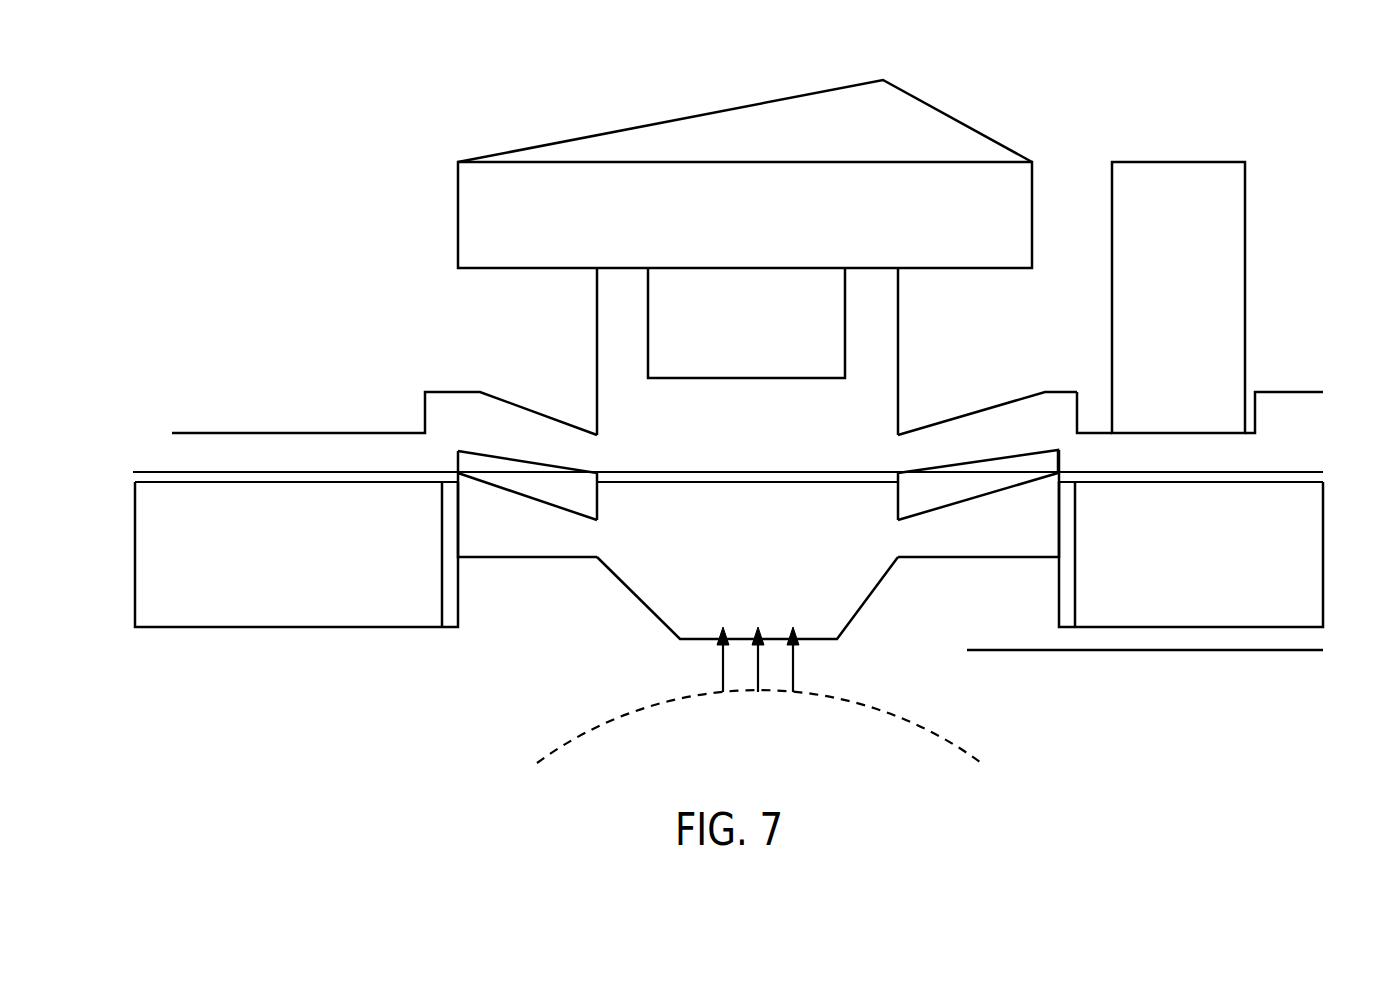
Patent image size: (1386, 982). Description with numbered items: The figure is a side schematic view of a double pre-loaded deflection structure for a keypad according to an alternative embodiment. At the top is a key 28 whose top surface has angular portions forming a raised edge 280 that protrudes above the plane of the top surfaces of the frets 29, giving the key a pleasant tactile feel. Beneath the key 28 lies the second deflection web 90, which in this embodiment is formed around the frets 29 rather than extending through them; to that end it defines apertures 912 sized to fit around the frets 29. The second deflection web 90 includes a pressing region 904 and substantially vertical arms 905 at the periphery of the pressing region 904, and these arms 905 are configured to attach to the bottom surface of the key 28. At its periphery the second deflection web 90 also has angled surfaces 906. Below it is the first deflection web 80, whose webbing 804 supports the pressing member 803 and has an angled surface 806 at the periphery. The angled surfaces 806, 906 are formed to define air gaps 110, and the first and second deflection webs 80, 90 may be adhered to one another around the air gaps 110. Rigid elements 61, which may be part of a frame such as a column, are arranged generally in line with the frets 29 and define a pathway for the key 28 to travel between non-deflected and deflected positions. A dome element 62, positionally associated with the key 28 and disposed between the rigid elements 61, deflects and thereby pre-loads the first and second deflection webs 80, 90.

The raised edge 280 is at (883, 80).
The key 28 is at (1005, 213).
The fret 29 is at (1228, 200).
The substantially vertical arm 905 is at (630, 315).
The pressing region 904 is at (710, 398).
The angled surface 906 is at (513, 400).
The second deflection web 90 is at (1035, 418).
The aperture 912 is at (1180, 423).
The air gap 110 is at (542, 483).
The angled surface 806 is at (525, 497).
The webbing 804 is at (543, 547).
The pressing member 803 is at (663, 600).
The first deflection web 80 is at (890, 571).
The rigid element 61 is at (235, 610).
The dome element 62 is at (873, 710).